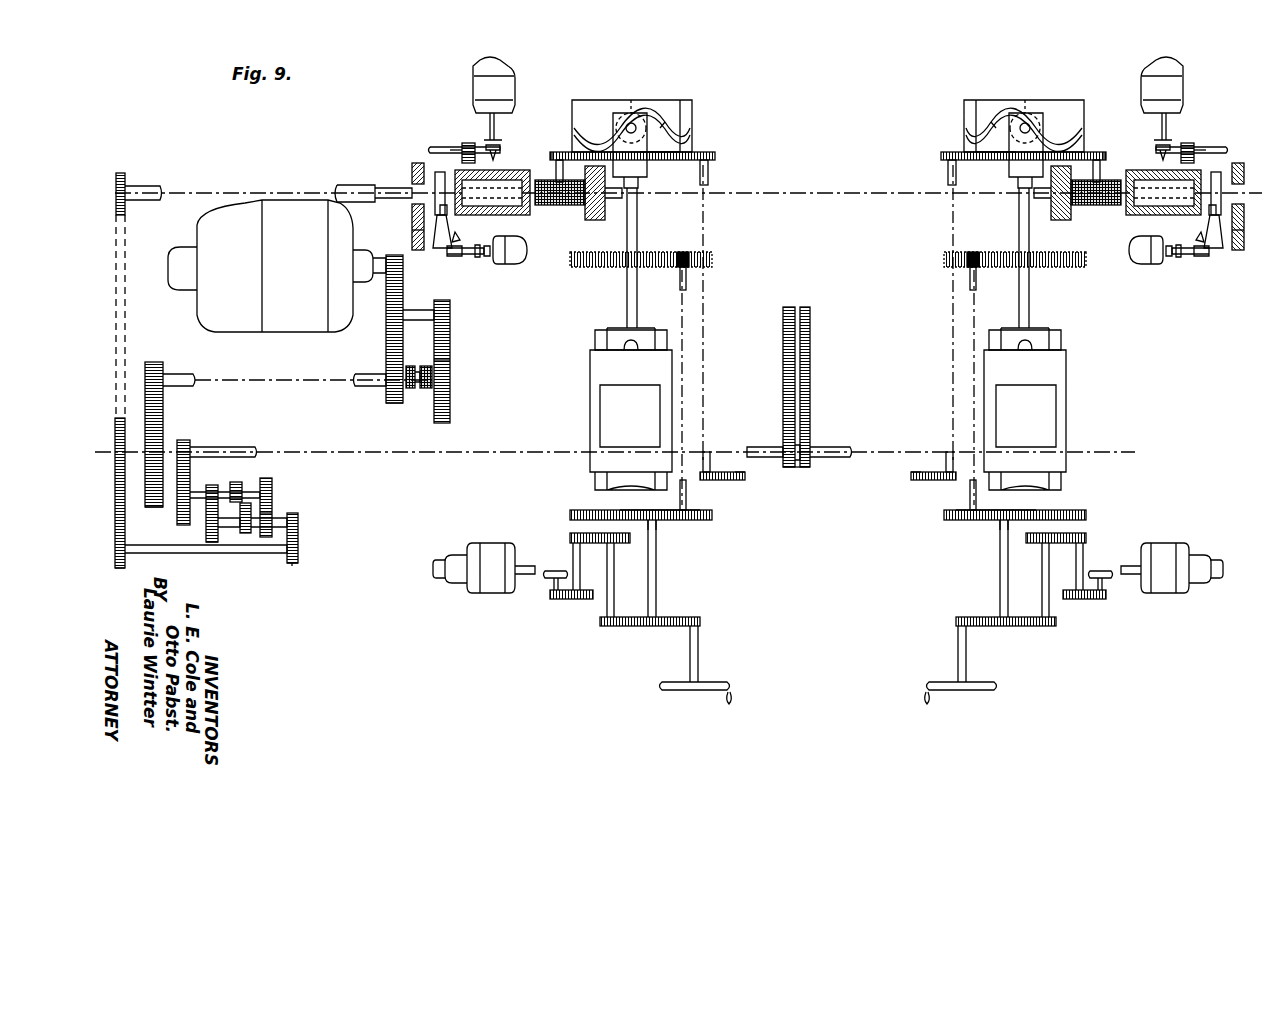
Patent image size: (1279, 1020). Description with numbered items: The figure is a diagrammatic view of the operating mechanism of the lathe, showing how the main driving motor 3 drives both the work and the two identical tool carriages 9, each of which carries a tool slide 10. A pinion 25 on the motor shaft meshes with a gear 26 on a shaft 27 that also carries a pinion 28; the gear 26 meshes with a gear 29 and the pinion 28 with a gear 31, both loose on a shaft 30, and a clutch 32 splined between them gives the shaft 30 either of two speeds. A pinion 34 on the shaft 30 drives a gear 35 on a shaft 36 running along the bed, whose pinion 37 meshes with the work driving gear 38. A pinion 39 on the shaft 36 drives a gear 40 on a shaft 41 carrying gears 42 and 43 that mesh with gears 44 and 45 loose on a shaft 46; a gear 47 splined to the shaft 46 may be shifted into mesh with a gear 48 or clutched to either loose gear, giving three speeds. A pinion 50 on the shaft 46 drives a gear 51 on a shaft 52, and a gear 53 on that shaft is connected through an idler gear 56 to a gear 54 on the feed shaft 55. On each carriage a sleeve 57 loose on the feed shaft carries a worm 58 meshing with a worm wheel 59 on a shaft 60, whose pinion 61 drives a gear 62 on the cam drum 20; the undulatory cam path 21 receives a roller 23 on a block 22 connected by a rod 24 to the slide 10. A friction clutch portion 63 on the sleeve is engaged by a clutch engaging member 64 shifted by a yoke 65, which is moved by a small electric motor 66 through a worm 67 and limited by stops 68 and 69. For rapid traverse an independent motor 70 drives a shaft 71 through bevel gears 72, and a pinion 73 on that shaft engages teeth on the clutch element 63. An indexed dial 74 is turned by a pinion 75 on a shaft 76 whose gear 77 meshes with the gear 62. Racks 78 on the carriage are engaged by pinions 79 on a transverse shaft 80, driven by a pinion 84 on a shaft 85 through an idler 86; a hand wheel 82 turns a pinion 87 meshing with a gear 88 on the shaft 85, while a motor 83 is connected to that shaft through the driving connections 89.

The main driving motor 3 is at (292, 207).
The tool carriage 9 is at (595, 336).
The tool slide 10 is at (597, 373).
The cam drum 20 is at (692, 100).
The undulatory cam path 21 is at (665, 118).
The block 22 is at (618, 113).
The roller 23 is at (633, 123).
The rod 24 is at (627, 290).
The pinion 25 is at (394, 255).
The gear 26 is at (386, 290).
The shaft 27 is at (418, 312).
The pinion 28 is at (450, 312).
The gear 29 is at (394, 403).
The shaft 30 is at (360, 374).
The gear 31 is at (450, 358).
The clutch 32 is at (418, 390).
The pinion 34 is at (156, 362).
The gear 35 is at (190, 395).
The shaft 36 is at (258, 448).
The pinion 37 is at (803, 467).
The work driving gear 38 is at (810, 385).
The pinion 39 is at (186, 442).
The gear 40 is at (168, 507).
The shaft 41 is at (200, 499).
The gear 42 is at (222, 468).
The gear 43 is at (268, 478).
The gear 44 is at (212, 542).
The gear 45 is at (272, 513).
The shaft 46 is at (298, 520).
The gear 47 is at (246, 533).
The gear 48 is at (236, 482).
The pinion 50 is at (298, 535).
The gear 51 is at (298, 566).
The shaft 52 is at (232, 553).
The gear 53 is at (120, 568).
The gear 54 is at (120, 173).
The feed shaft 55 is at (150, 186).
The idler gear 56 is at (115, 422).
The sleeve 57 is at (505, 215).
The worm 58 is at (560, 205).
The worm wheel 59 is at (548, 208).
The shaft 60 is at (556, 168).
The pinion 61 is at (558, 152).
The gear 62 is at (675, 160).
The friction clutch portion 63 is at (468, 143).
The clutch engaging member 64 is at (414, 163).
The yoke 65 is at (412, 232).
The electric motor 66 is at (508, 264).
The worm 67 is at (452, 256).
The stop 68 is at (433, 245).
The stop 69 is at (455, 232).
The electric motor 70 is at (512, 92).
The shaft 71 is at (432, 147).
The bevel gears 72 is at (498, 142).
The pinion 73 is at (455, 145).
The indexed dial 74 is at (738, 480).
The pinion 75 is at (702, 472).
The shaft 76 is at (703, 350).
The gear 77 is at (715, 156).
The rack 78 is at (712, 258).
The pinion 79 is at (684, 252).
The transverse shaft 80 is at (680, 315).
The hand wheel 82 is at (685, 690).
The motor 83 is at (455, 585).
The pinion 84 is at (655, 510).
The shaft 85 is at (656, 580).
The idler 86 is at (660, 520).
The pinion 87 is at (698, 626).
The gear 88 is at (668, 626).
The driving connections 89 is at (828, 575).